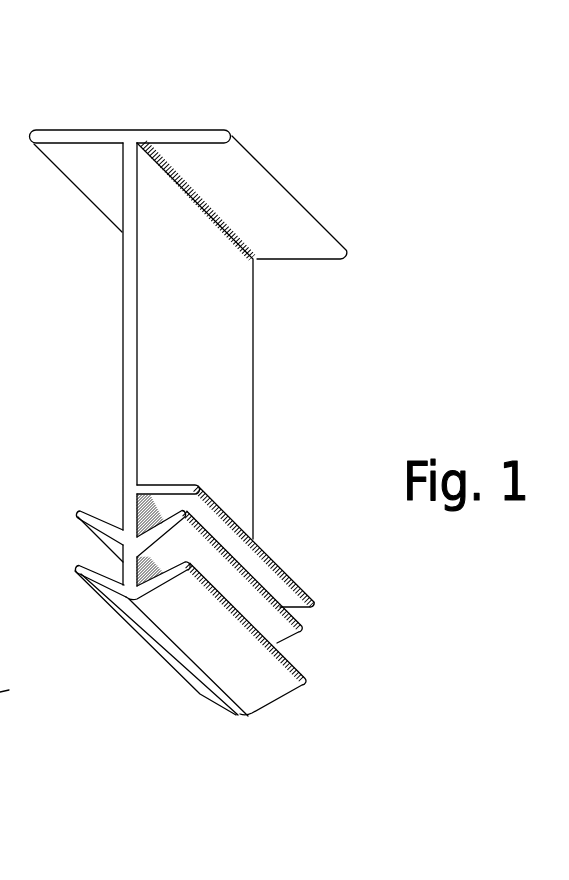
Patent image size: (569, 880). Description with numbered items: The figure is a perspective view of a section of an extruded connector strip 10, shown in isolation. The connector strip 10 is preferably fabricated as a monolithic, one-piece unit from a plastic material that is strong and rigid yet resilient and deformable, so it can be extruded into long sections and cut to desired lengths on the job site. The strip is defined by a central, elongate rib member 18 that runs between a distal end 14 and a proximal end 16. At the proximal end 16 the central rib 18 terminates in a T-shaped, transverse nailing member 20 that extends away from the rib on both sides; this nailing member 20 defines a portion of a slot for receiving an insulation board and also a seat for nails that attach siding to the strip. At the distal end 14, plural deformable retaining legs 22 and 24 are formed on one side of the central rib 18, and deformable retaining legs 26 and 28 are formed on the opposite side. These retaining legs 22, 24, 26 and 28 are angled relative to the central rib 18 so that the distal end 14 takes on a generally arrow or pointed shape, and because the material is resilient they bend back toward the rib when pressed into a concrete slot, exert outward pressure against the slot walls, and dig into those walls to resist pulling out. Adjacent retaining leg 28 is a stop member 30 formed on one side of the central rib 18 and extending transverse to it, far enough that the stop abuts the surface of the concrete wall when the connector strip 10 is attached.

The connector strip 10 is at (384, 341).
The distal end 14 is at (250, 746).
The proximal end 16 is at (139, 91).
The central rib member 18 is at (232, 392).
The transverse nailing member 20 is at (170, 134).
The retaining leg 22 is at (87, 506).
The retaining leg 24 is at (88, 568).
The retaining leg 26 is at (273, 690).
The retaining leg 28 is at (283, 630).
The stop member 30 is at (213, 505).